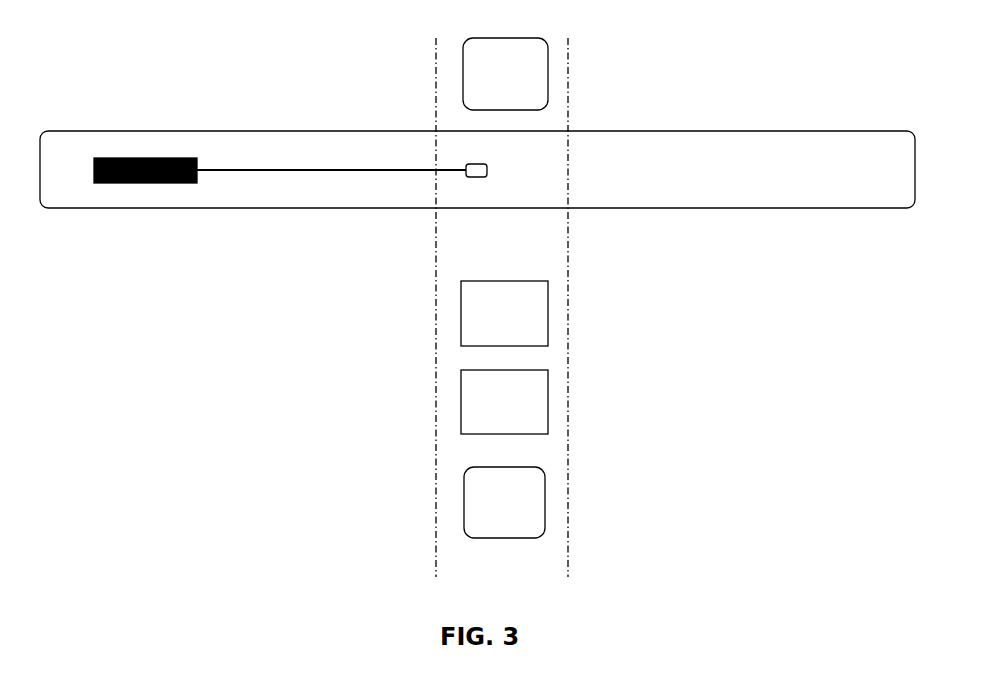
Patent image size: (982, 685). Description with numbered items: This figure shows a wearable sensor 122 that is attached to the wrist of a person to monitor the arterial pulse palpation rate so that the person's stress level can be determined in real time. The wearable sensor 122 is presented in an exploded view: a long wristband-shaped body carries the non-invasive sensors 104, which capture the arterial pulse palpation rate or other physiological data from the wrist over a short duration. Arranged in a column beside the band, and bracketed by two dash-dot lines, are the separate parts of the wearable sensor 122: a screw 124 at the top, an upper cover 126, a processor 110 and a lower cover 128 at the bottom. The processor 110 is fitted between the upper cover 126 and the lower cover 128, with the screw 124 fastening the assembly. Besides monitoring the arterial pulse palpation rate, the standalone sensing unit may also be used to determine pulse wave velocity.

The wearable sensor 122 is at (222, 387).
The sensors 104 is at (117, 183).
The screw 124 is at (548, 72).
The upper cover 126 is at (548, 312).
The processor 110 is at (548, 400).
The lower cover 128 is at (545, 500).